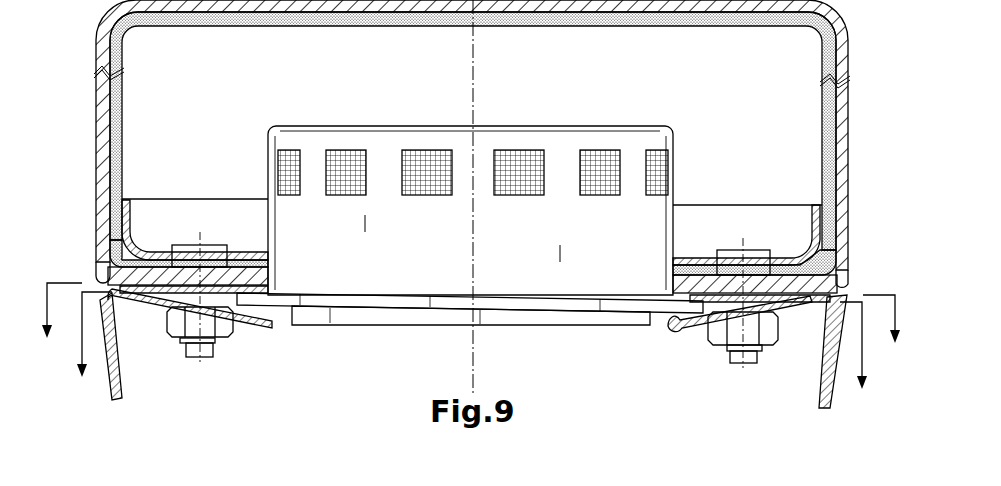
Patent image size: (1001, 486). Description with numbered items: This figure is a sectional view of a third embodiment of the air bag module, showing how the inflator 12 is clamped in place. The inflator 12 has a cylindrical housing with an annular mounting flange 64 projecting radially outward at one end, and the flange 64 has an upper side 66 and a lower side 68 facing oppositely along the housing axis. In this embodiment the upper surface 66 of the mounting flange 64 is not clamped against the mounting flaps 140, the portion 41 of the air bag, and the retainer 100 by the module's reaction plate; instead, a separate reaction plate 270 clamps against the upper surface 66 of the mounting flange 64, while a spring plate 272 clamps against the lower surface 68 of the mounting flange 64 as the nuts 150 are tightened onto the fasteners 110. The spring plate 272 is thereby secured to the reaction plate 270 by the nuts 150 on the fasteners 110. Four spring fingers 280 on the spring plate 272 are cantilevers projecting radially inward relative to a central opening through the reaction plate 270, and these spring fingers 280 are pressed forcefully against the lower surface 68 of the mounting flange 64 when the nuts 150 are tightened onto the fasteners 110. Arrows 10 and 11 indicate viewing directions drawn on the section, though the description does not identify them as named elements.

The lighting device assembly 10 is at (468, 327).
The mounting bracket assembly 11 is at (468, 353).
The inflator 12 is at (290, 233).
The portion of the air bag 41 is at (783, 262).
The mounting flange 64 is at (441, 290).
The upper side of the mounting flange 66 is at (268, 279).
The lower side of the mounting flange 68 is at (292, 325).
The retainer 100 is at (127, 198).
The fastener 110 is at (200, 357).
The mounting flap 140 is at (827, 277).
The nut 150 is at (172, 322).
The reaction plate 270 is at (840, 409).
The spring plate 272 is at (800, 318).
The spring finger 280 is at (248, 315).